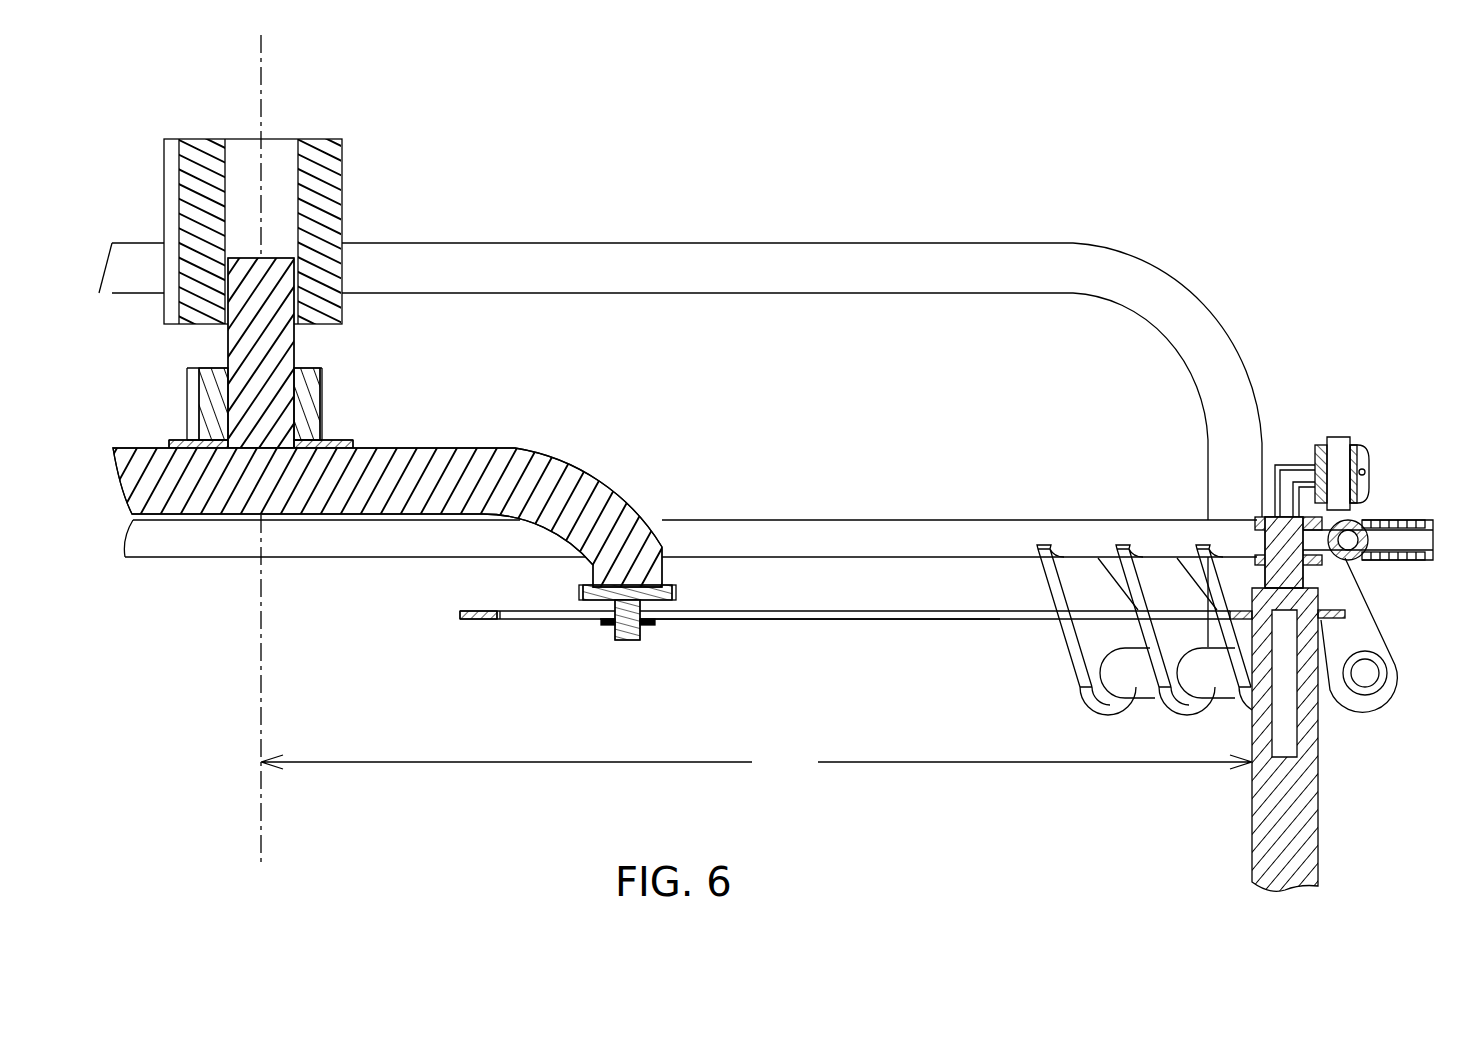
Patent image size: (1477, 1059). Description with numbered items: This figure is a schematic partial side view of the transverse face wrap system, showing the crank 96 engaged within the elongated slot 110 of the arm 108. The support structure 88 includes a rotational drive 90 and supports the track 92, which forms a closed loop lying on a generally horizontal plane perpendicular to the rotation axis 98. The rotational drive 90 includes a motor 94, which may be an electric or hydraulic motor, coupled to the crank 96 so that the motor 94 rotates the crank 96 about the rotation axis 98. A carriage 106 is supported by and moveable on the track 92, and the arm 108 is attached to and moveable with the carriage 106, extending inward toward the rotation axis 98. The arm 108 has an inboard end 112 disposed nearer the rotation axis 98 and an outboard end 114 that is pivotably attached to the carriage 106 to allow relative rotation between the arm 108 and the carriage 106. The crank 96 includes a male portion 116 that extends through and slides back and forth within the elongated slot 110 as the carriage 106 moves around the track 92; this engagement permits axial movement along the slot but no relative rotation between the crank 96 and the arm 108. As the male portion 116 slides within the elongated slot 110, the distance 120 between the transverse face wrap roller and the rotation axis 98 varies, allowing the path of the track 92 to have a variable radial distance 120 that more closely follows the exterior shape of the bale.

The support structure 88 is at (757, 252).
The rotational drive 90 is at (312, 139).
The track 92 is at (845, 532).
The motor 94 is at (313, 393).
The crank 96 is at (485, 456).
The rotation axis 98 is at (262, 73).
The carriage 106 is at (1332, 438).
The arm 108 is at (910, 608).
The elongated slot 110 is at (800, 619).
The inboard end 112 is at (460, 612).
The outboard end 114 is at (1348, 614).
The male portion 116 is at (627, 632).
The distance 120 is at (756, 761).